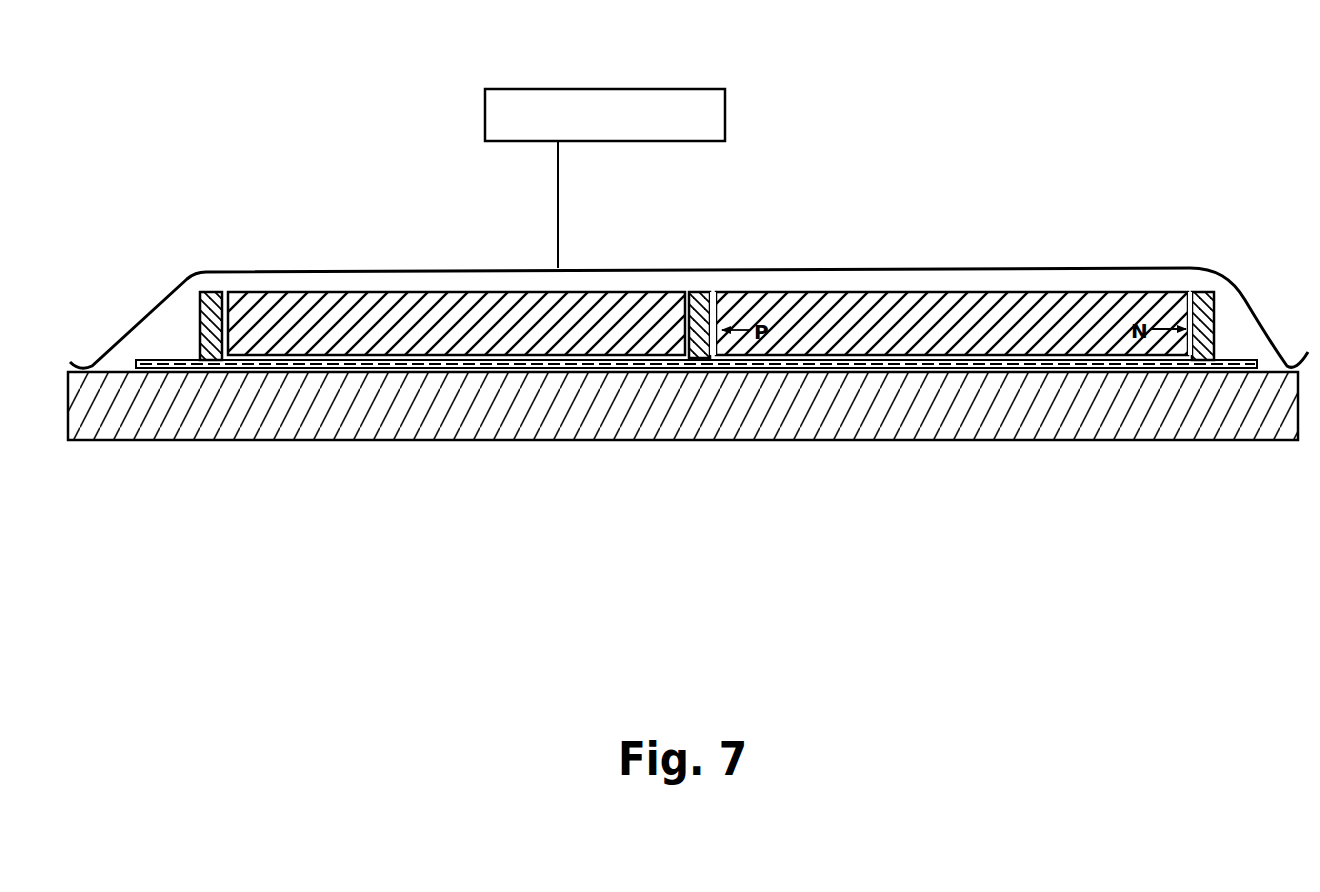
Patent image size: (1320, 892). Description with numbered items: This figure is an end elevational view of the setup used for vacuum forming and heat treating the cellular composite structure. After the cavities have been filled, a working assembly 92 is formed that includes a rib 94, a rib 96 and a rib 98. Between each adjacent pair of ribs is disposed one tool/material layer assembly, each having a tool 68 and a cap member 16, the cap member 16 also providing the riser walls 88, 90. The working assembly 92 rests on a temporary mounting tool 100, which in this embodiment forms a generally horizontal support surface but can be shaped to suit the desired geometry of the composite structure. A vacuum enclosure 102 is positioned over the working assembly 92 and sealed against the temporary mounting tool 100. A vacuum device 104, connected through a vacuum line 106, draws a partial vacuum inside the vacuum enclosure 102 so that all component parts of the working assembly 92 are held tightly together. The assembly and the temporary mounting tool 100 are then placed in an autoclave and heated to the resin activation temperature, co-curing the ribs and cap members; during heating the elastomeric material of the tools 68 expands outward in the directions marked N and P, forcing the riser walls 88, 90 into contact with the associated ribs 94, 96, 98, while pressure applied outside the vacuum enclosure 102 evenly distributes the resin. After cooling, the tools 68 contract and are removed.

The cap member 16 is at (1085, 360).
The tool 68 is at (385, 318).
The riser wall 88 is at (735, 295).
The riser wall 90 is at (1187, 308).
The working assembly 92 is at (824, 124).
The rib 94 is at (1210, 310).
The rib 96 is at (710, 292).
The rib 98 is at (213, 297).
The temporary mounting tool 100 is at (1005, 417).
The vacuum enclosure 102 is at (642, 270).
The vacuum device 104 is at (692, 93).
The vacuum line 106 is at (556, 212).